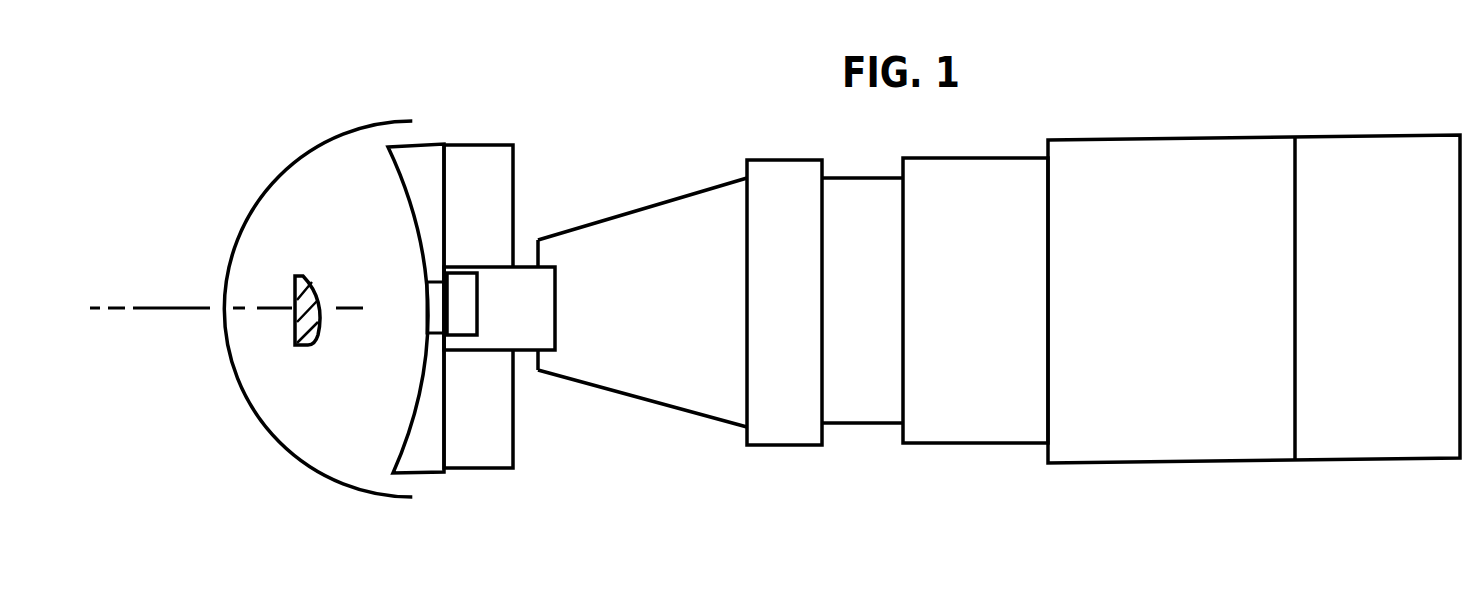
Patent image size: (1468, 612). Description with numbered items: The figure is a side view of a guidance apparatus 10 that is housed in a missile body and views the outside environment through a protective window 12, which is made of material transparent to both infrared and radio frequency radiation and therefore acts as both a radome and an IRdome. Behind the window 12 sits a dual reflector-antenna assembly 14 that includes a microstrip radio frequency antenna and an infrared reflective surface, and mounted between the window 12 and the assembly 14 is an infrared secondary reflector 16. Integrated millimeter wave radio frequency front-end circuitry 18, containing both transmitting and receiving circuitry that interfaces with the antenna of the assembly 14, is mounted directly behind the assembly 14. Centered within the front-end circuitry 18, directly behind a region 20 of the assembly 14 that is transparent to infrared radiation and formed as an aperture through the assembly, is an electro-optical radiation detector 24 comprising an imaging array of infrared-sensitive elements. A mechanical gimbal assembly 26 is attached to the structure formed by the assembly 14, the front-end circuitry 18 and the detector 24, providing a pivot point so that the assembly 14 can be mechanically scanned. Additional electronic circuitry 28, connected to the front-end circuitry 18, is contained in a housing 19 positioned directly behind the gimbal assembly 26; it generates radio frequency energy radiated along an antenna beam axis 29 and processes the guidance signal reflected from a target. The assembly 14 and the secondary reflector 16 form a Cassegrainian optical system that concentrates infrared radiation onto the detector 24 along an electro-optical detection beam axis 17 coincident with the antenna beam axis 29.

The guidance apparatus 10 is at (866, 556).
The protective window 12 is at (336, 484).
The dual reflector-antenna assembly 14 is at (433, 143).
The infrared secondary reflector 16 is at (311, 274).
The electro-optical detection beam axis 17 is at (200, 308).
The front-end circuitry 18 is at (479, 130).
The housing 19 is at (1139, 371).
The region 20 is at (438, 303).
The electro-optical radiation detector 24 is at (468, 336).
The mechanical gimbal assembly 26 is at (498, 352).
The electronic circuitry 28 is at (1092, 464).
The antenna beam axis 29 is at (141, 307).